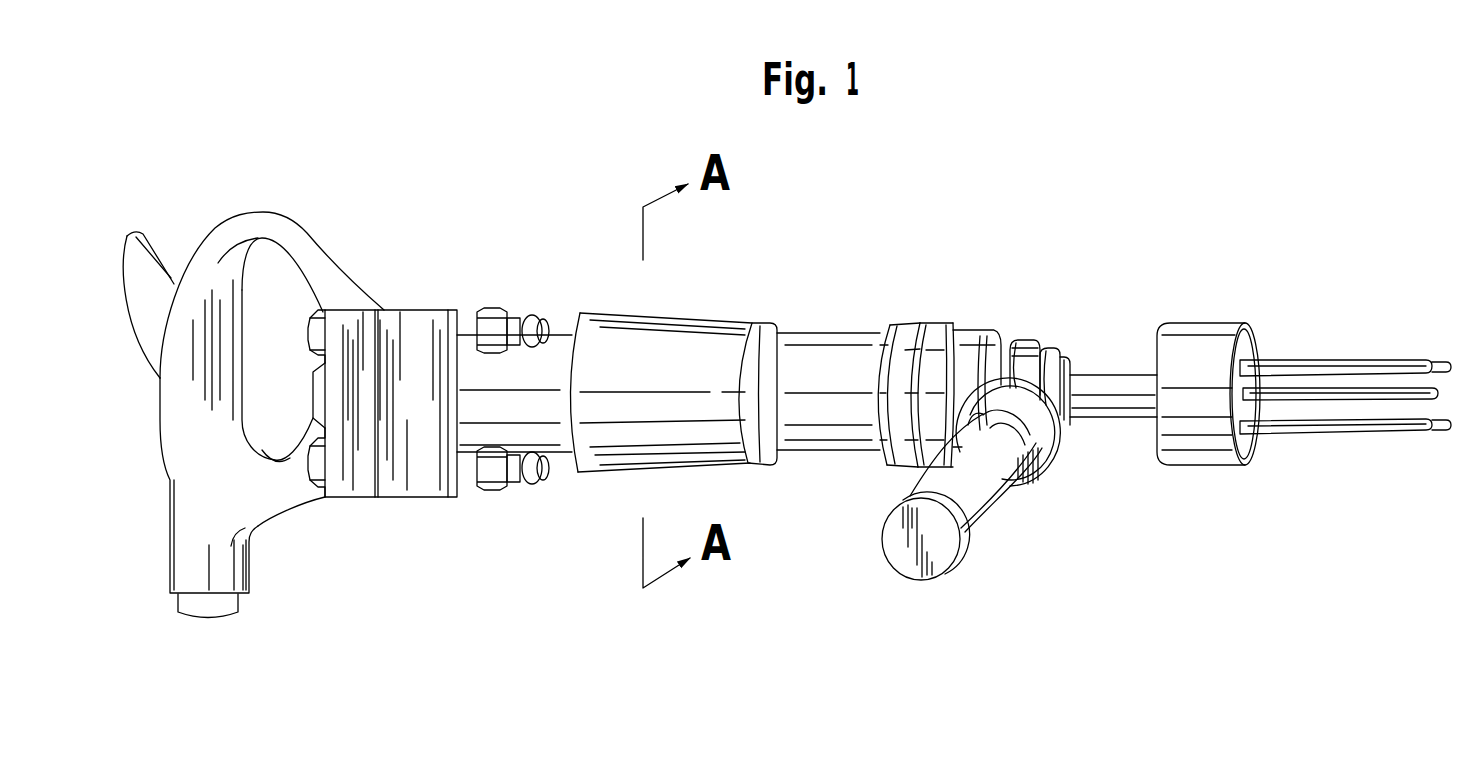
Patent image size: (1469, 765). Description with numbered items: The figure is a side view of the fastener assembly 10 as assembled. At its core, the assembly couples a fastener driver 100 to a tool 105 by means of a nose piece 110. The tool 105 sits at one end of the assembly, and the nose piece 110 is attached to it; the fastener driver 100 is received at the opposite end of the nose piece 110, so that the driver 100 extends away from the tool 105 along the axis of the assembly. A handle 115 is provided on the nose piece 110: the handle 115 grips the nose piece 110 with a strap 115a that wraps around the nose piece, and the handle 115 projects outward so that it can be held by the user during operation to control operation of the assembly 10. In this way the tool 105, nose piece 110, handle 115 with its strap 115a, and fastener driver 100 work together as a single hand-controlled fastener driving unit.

The fastener assembly 10 is at (1089, 221).
The tool 105 is at (694, 295).
The nose piece 110 is at (939, 304).
The handle 115 is at (988, 516).
The strap 115a is at (1030, 340).
The fastener driver 100 is at (1287, 306).